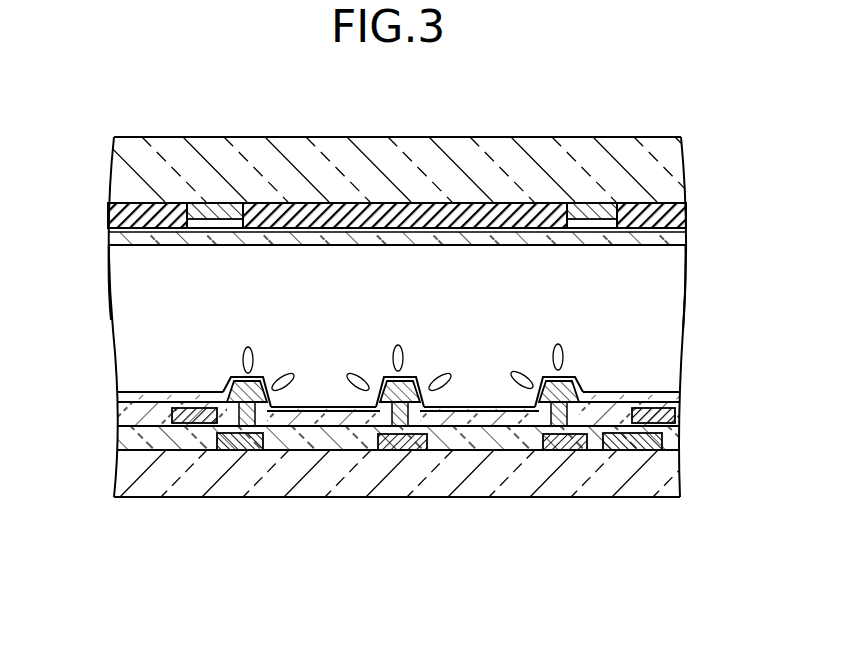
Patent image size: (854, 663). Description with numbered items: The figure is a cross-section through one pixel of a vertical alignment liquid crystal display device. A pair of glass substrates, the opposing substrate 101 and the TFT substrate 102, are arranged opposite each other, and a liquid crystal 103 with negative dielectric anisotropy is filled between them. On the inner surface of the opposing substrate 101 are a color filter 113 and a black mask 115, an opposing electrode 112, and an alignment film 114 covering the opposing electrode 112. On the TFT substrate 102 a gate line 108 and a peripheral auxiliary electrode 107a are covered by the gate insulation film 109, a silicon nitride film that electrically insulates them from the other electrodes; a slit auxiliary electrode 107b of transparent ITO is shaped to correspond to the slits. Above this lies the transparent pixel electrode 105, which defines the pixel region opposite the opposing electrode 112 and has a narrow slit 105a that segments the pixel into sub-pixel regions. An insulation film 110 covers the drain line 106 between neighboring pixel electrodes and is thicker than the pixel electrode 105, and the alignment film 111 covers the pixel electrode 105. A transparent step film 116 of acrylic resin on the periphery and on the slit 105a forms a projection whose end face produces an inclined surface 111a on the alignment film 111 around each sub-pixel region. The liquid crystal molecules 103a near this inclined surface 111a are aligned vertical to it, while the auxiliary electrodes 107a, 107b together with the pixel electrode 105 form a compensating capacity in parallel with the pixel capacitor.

The opposing substrate 101 is at (545, 166).
The TFT substrate 102 is at (615, 480).
The liquid crystal 103 is at (665, 328).
The liquid crystal molecules 103a is at (353, 372).
The pixel electrode 105 is at (327, 427).
The slit 105a is at (400, 398).
The drain line 106 is at (121, 425).
The peripheral auxiliary electrode 107a is at (247, 451).
The slit auxiliary electrode 107b is at (405, 451).
The gate line 108 is at (678, 442).
The gate insulation film 109 is at (168, 437).
The insulation film 110 is at (137, 412).
The alignment film 111 is at (205, 400).
The inclined surface 111a is at (375, 378).
The opposing electrode 112 is at (553, 231).
The color filter 113 is at (155, 202).
The alignment film 114 is at (212, 246).
The black mask 115 is at (217, 203).
The transparent step film 116 is at (268, 377).